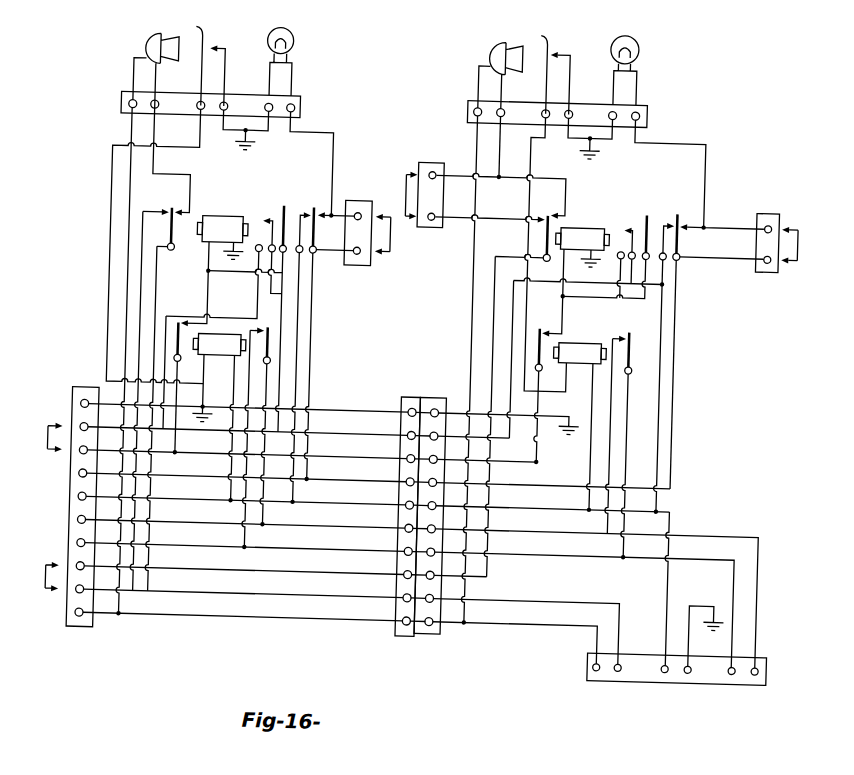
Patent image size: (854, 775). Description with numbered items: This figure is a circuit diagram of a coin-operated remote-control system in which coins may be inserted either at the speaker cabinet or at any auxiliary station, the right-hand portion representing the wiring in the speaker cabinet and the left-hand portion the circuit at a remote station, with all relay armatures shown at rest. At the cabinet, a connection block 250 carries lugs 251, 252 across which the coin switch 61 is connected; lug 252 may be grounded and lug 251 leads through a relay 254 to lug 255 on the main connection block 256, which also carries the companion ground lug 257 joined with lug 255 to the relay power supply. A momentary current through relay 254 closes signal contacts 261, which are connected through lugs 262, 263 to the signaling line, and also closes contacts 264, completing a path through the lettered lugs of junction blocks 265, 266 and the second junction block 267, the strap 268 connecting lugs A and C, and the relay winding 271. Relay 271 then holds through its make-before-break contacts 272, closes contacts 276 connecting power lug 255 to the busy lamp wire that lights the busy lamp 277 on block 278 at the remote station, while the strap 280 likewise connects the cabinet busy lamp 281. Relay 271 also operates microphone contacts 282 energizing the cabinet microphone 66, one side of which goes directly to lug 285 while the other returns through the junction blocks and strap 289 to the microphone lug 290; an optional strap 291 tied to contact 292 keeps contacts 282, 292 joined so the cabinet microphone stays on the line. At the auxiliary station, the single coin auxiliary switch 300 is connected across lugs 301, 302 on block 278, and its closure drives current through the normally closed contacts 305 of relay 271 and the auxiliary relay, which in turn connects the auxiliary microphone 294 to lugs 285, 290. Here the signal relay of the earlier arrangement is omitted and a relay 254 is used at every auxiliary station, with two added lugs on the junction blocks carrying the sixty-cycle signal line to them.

The auxiliary microphone 294 is at (136, 56).
The single coin auxiliary switch 300 is at (195, 36).
The lug 301 is at (196, 76).
The lug 302 is at (217, 105).
The busy lamp 277 is at (284, 45).
The block 278 is at (295, 108).
The microphone contacts 282 is at (165, 213).
The contact 292 is at (175, 216).
The make-before-break contacts 272 is at (271, 216).
The contacts 276 is at (311, 214).
The normally closed contacts 305 is at (652, 226).
The relay 271 is at (211, 222).
The contacts 264 is at (184, 328).
The relay 254 is at (220, 338).
The signal contacts 261 is at (270, 342).
The strap 280 is at (385, 241).
The second junction block 267 is at (97, 395).
The strap 268 is at (48, 435).
The strap 289 is at (50, 598).
The junction block 266 is at (409, 397).
The junction block 265 is at (434, 397).
The microphone 66 is at (499, 41).
The coin switch 61 is at (541, 47).
The lug 252 is at (563, 104).
The lug 251 is at (538, 97).
The cabinet busy lamp 281 is at (631, 43).
The connection block 250 is at (641, 107).
The strap 291 is at (400, 181).
The main connection block 256 is at (594, 663).
The lug 285 is at (602, 667).
The microphone lug 290 is at (624, 667).
The lug 255 is at (671, 667).
The lug 257 is at (694, 667).
The lug 262 is at (739, 666).
The lug 263 is at (762, 666).